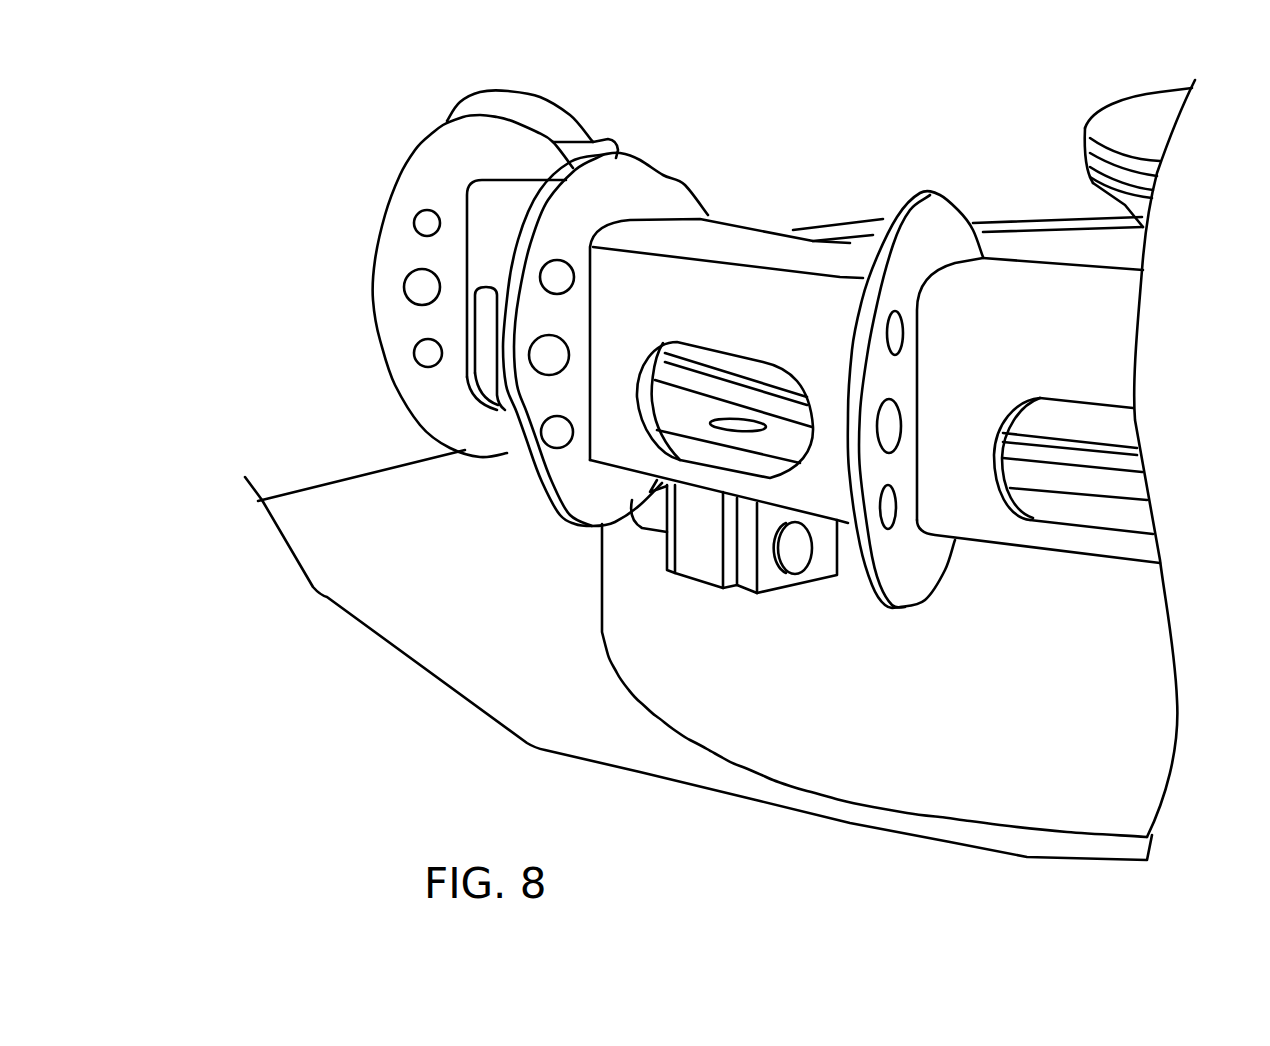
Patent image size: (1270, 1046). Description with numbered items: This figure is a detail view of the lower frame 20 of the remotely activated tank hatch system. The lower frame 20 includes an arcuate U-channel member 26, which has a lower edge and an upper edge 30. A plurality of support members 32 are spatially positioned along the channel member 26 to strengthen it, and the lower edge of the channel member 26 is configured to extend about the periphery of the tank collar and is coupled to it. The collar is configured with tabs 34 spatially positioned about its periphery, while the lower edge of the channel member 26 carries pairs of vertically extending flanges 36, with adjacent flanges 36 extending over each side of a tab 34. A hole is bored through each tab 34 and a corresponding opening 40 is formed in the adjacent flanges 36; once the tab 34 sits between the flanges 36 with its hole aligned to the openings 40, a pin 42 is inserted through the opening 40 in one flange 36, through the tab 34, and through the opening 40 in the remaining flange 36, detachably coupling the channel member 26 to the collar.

The lower frame 20 is at (352, 158).
The U-channel member 26 is at (1103, 352).
The upper edge 30 is at (734, 237).
The support members 32 is at (398, 350).
The tabs 34 is at (707, 557).
The flanges 36 is at (752, 560).
The opening 40 is at (783, 567).
The pin 42 is at (795, 560).